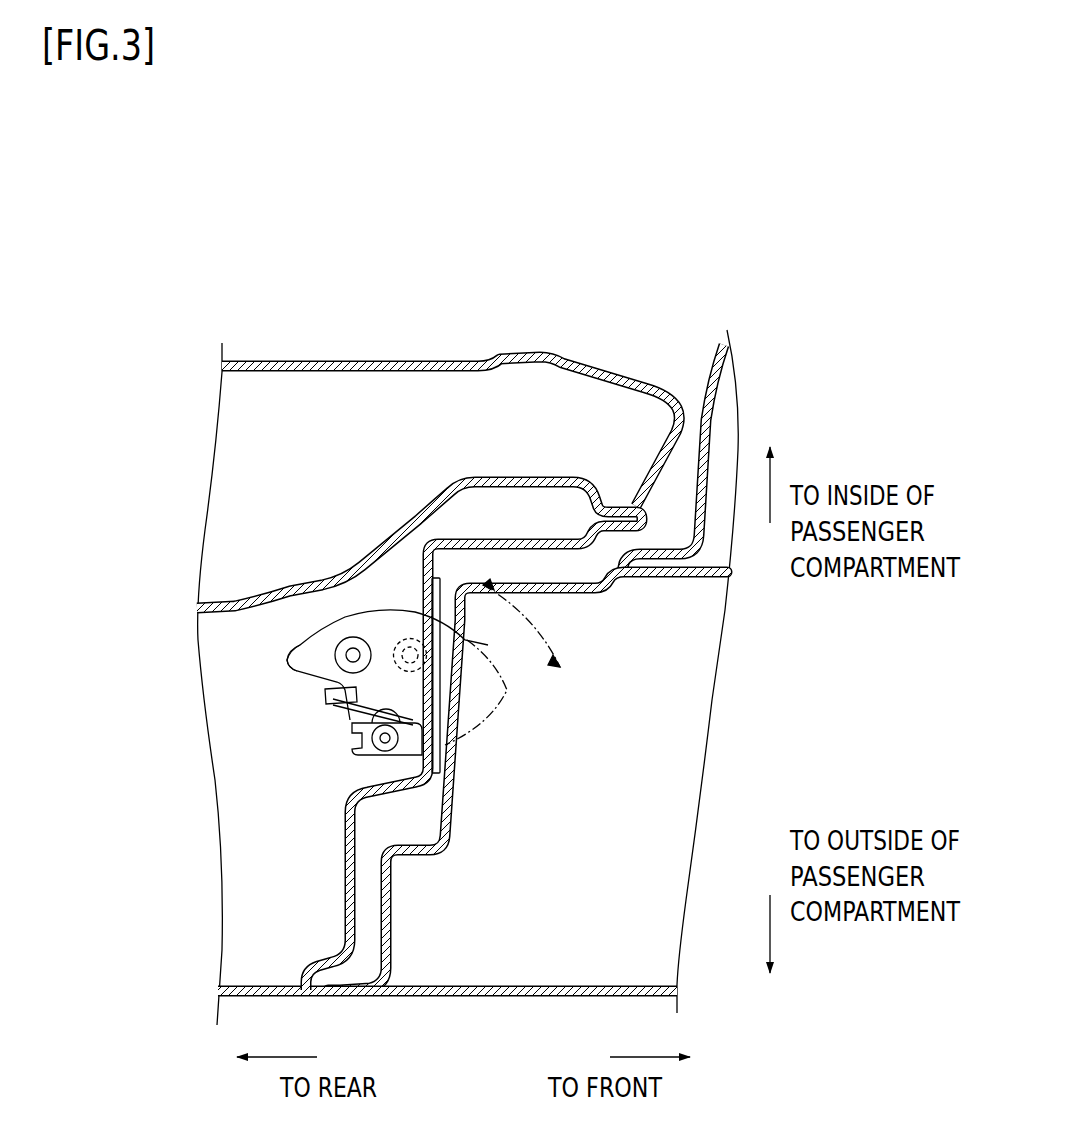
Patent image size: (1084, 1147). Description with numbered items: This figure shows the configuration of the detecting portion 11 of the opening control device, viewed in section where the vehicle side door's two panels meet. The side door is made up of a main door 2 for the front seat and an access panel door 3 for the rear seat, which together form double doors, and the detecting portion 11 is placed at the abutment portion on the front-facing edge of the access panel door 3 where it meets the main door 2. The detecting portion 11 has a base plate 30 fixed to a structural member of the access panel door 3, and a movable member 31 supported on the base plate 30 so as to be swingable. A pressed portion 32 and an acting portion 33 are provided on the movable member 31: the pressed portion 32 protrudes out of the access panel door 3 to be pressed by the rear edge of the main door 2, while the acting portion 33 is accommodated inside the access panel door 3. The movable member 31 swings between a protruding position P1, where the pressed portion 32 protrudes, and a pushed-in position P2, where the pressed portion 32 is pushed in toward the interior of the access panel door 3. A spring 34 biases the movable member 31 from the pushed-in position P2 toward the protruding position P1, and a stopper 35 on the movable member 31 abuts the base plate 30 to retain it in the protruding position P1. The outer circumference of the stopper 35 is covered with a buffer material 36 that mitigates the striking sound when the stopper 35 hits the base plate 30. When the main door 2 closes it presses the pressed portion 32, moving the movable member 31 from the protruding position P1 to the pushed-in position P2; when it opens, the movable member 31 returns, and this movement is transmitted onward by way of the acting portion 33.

The main door 2 is at (487, 997).
The access panel door 3 is at (360, 360).
The detecting portion 11 is at (338, 762).
The base plate 30 is at (430, 774).
The movable member 31 is at (390, 610).
The pressed portion 32 is at (440, 615).
The acting portion 33 is at (287, 658).
The spring 34 is at (347, 715).
The stopper 35 is at (353, 637).
The buffer material 36 is at (335, 642).
The protruding position P1 is at (508, 690).
The pushed-in position P2 is at (480, 590).